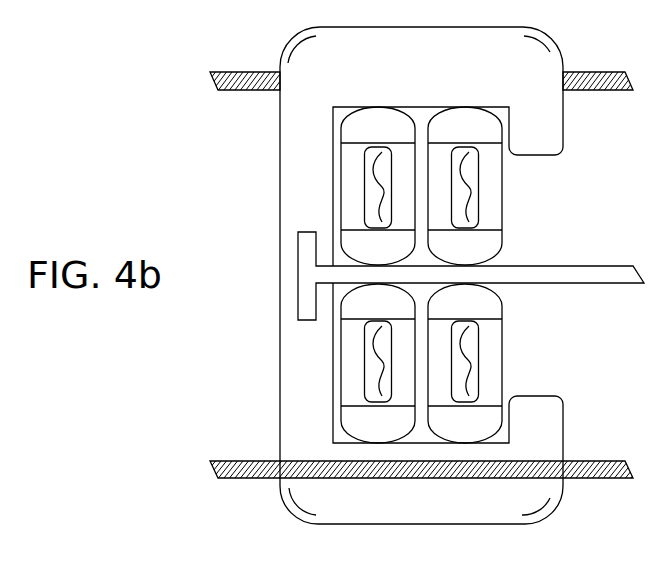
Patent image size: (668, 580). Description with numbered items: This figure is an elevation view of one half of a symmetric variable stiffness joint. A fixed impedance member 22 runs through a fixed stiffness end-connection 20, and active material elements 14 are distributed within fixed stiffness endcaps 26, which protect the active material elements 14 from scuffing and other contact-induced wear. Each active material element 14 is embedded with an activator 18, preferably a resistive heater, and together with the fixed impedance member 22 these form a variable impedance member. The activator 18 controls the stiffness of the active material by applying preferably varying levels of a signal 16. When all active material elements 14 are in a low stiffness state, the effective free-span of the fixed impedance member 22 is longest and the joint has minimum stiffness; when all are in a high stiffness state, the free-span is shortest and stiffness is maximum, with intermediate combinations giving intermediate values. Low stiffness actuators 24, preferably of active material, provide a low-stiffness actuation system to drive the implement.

The active material element 14 is at (502, 343).
The signal 16 is at (391, 362).
The activator 18 is at (478, 195).
The fixed stiffness end-connection 20 is at (375, 79).
The fixed impedance member 22 is at (563, 284).
The low stiffness actuator 24 is at (250, 91).
The fixed stiffness endcap 26 is at (502, 241).